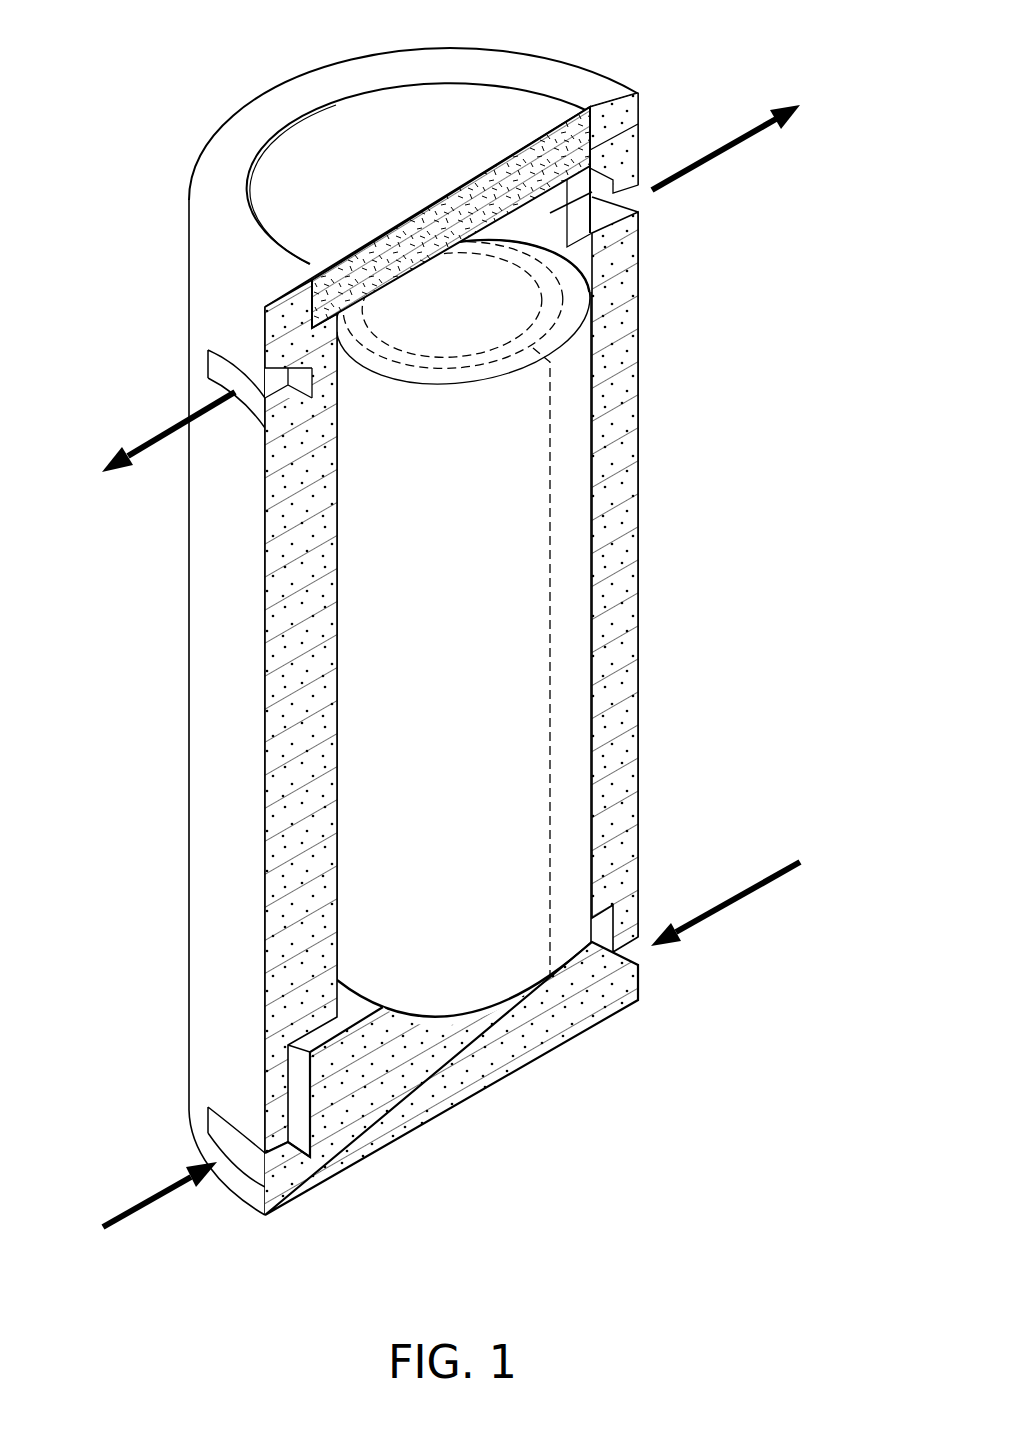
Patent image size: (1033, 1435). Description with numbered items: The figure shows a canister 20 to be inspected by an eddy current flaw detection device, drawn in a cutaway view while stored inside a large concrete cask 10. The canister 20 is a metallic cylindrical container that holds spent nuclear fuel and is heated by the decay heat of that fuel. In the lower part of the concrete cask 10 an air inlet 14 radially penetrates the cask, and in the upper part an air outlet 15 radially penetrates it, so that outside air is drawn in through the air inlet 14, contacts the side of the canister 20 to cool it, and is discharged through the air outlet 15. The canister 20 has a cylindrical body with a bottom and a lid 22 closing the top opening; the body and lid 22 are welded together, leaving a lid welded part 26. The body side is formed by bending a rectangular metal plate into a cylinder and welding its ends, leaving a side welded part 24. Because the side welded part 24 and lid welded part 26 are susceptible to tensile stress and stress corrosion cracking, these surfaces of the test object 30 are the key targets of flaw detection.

The concrete cask 10 is at (212, 738).
The air inlet 14 is at (290, 1157).
The air outlet 15 is at (605, 213).
The canister 20 is at (508, 661).
The test object 30 is at (588, 690).
The lid 22 is at (452, 293).
The side welded part 24 is at (556, 578).
The lid welded part 26 is at (562, 308).